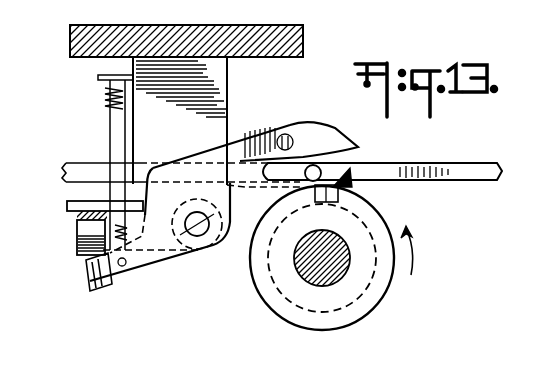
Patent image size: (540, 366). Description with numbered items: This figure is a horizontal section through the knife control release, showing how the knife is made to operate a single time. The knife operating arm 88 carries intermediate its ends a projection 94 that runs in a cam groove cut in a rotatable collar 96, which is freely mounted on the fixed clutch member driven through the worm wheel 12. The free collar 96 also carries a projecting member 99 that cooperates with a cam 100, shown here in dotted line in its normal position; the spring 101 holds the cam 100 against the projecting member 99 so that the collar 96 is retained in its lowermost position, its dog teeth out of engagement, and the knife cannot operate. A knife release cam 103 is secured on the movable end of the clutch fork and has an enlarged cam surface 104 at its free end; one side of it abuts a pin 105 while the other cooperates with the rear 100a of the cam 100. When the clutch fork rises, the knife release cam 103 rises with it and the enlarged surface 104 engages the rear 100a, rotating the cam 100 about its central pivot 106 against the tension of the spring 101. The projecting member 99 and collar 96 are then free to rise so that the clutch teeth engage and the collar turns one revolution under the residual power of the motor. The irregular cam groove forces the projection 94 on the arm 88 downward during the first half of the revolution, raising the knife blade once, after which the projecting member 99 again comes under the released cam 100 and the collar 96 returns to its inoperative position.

The worm wheel 12 is at (16, 115).
The knife operating arm 88 is at (468, 167).
The projection 94 is at (340, 201).
The rotatable collar 96 is at (372, 300).
The projecting member 99 is at (342, 185).
The cam 100 is at (325, 118).
The rear of the cam 100a is at (105, 285).
The spring 101 is at (107, 124).
The knife release cam 103 is at (75, 221).
The enlarged cam surface 104 is at (77, 246).
The pin 105 is at (67, 205).
The central pivot 106 is at (197, 237).